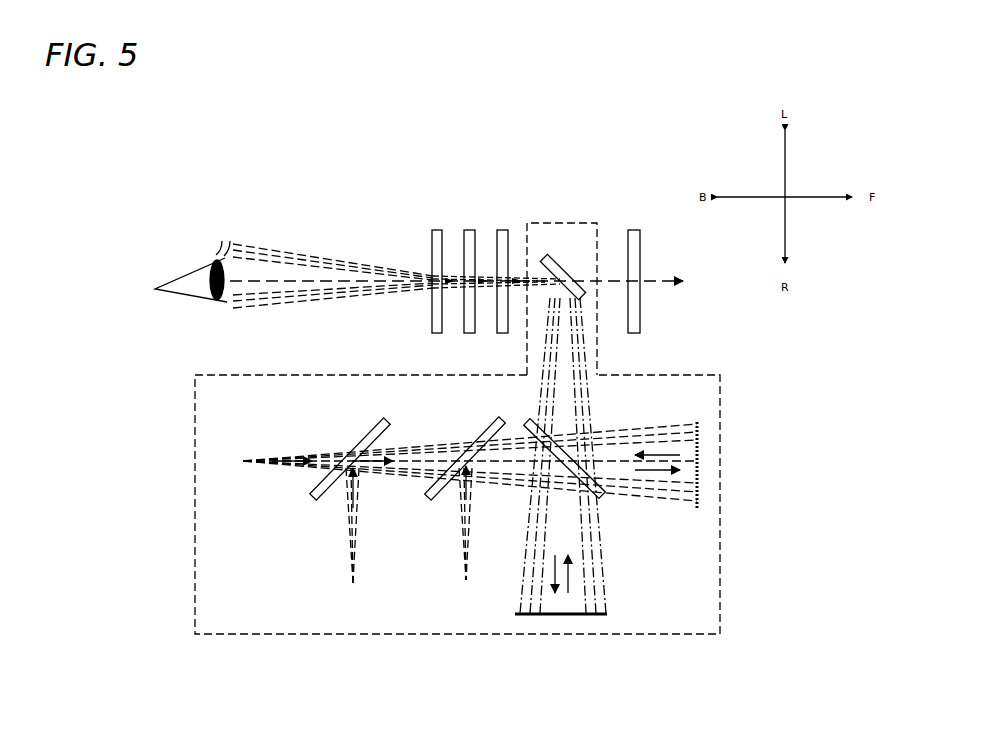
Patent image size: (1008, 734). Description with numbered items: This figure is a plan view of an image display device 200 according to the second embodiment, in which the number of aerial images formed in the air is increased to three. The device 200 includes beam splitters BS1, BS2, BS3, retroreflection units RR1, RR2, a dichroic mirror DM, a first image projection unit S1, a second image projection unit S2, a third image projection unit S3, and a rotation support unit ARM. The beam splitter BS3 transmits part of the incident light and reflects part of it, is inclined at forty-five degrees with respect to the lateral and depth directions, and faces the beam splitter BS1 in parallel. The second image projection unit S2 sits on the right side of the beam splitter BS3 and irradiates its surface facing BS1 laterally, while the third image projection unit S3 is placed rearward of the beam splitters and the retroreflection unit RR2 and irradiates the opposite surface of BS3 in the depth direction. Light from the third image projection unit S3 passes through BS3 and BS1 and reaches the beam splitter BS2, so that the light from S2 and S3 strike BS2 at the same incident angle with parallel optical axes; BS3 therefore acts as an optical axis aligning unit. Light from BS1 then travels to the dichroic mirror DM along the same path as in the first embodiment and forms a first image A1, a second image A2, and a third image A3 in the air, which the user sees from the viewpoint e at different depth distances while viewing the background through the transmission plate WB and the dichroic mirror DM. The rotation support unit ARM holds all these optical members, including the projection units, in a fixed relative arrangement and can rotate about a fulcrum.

The image display device 200 is at (306, 206).
The viewpoint e is at (207, 264).
The first image A1 is at (509, 268).
The second image A2 is at (470, 268).
The third image A3 is at (429, 268).
The dichroic mirror DM is at (562, 299).
The transmission plate WB is at (633, 268).
The rotation support unit ARM is at (457, 525).
The first image projection unit S1 is at (468, 541).
The second image projection unit S2 is at (351, 542).
The third image projection unit S3 is at (449, 462).
The beam splitter BS1 is at (447, 471).
The beam splitter BS2 is at (583, 472).
The beam splitter BS3 is at (332, 471).
The retroreflection unit RR1 is at (586, 589).
The retroreflection unit RR2 is at (666, 450).